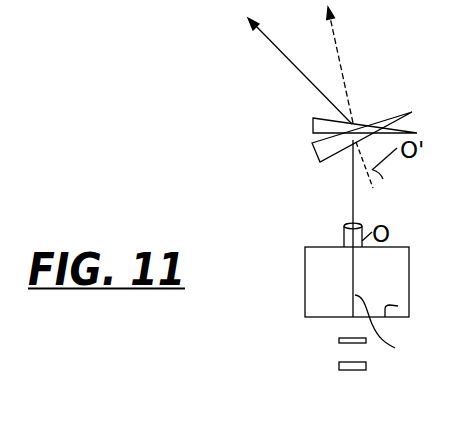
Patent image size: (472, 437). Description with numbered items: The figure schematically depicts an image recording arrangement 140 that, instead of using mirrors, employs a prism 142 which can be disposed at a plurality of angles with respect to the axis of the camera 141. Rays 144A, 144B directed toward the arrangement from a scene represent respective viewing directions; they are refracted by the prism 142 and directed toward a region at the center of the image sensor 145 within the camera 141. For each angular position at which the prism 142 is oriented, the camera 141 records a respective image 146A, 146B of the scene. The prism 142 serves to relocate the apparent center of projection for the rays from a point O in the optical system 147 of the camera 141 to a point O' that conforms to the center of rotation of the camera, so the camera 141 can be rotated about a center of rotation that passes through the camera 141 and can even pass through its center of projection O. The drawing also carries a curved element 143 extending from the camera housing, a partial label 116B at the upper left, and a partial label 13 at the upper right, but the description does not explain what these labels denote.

The light source unit 116B is at (53, 6).
The optical scanning device 13 is at (459, 31).
The image recording arrangement 140 is at (227, 382).
The camera 141 is at (306, 280).
The prism 142 is at (313, 133).
The flexible wiring 143 is at (394, 327).
The ray 144A is at (345, 88).
The ray 144B is at (280, 55).
The image sensor 145 is at (398, 306).
The image 146A is at (339, 340).
The image 146B is at (352, 372).
The optical system 147 is at (348, 245).